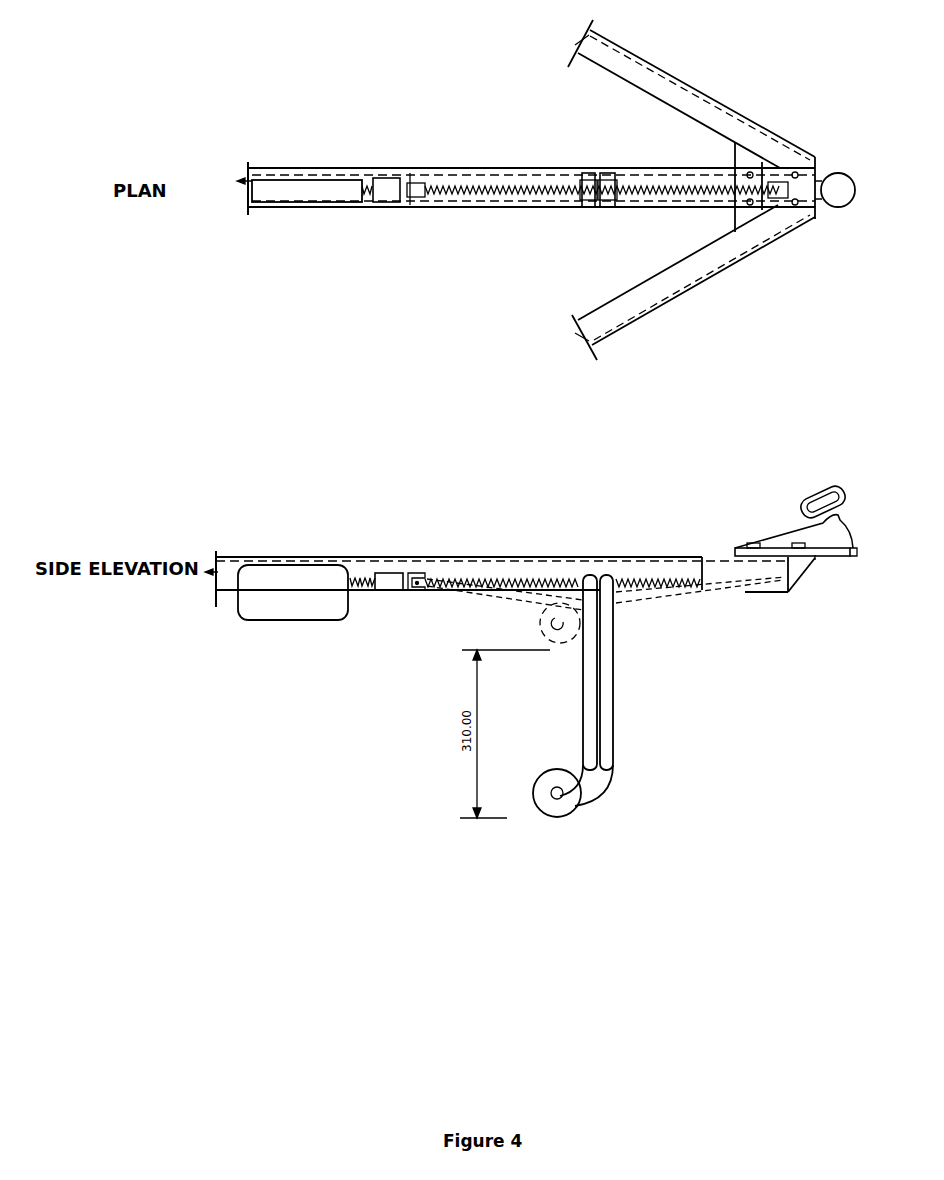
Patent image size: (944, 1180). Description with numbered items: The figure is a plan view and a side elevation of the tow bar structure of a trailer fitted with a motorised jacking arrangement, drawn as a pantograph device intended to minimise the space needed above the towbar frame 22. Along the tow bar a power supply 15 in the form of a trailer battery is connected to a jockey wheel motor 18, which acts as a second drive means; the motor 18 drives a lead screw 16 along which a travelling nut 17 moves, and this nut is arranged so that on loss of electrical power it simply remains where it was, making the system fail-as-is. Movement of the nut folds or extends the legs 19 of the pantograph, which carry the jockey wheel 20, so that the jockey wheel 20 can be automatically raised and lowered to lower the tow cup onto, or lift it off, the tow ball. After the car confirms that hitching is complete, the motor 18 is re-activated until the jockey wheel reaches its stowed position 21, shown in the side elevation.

The power supply 15 is at (280, 582).
The threaded screw rod 16 is at (512, 580).
The travelling nut clamps 17 is at (457, 583).
The jockey wheel motor 18 is at (378, 582).
The upright legs 19 is at (607, 677).
The jockey wheel 20 is at (543, 787).
The stowed position 21 is at (540, 622).
The beam frame 22 is at (232, 557).